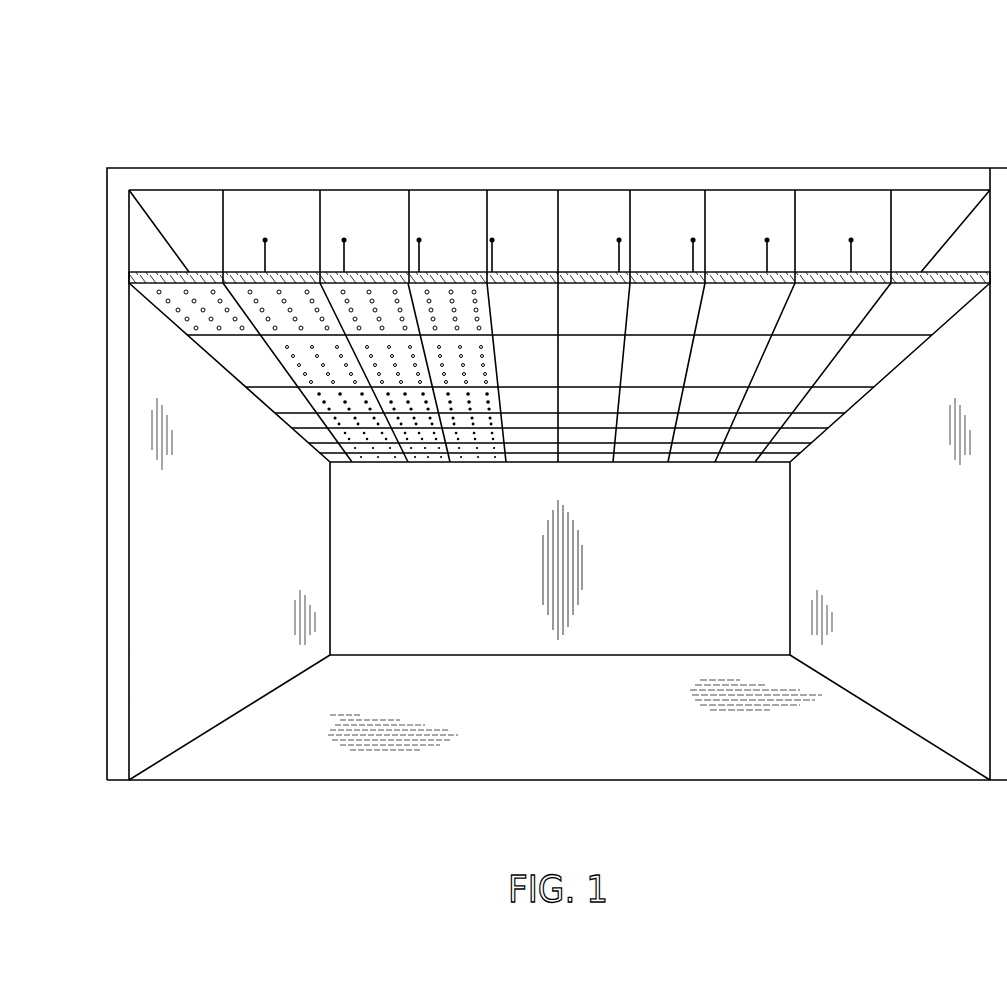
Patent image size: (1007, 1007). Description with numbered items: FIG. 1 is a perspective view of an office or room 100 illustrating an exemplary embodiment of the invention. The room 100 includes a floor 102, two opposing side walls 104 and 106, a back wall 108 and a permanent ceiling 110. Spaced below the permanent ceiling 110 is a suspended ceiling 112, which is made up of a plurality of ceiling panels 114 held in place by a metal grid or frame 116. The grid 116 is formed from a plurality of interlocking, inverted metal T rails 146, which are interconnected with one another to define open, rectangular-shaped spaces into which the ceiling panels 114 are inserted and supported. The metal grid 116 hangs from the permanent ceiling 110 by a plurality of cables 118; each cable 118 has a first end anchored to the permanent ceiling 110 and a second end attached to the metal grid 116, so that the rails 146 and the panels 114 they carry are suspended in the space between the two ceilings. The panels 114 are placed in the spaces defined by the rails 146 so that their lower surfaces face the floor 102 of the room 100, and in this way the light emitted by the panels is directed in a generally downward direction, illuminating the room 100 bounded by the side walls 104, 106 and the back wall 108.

The room 100 is at (621, 87).
The floor 102 is at (516, 720).
The side wall 104 is at (153, 740).
The side wall 106 is at (975, 737).
The back wall 108 is at (696, 628).
The permanent ceiling 110 is at (908, 192).
The suspended ceiling 112 is at (908, 283).
The ceiling panels 114 is at (157, 300).
The metal grid 116 is at (615, 423).
The cables 118 is at (222, 212).
The inverted T rails 146 is at (530, 415).